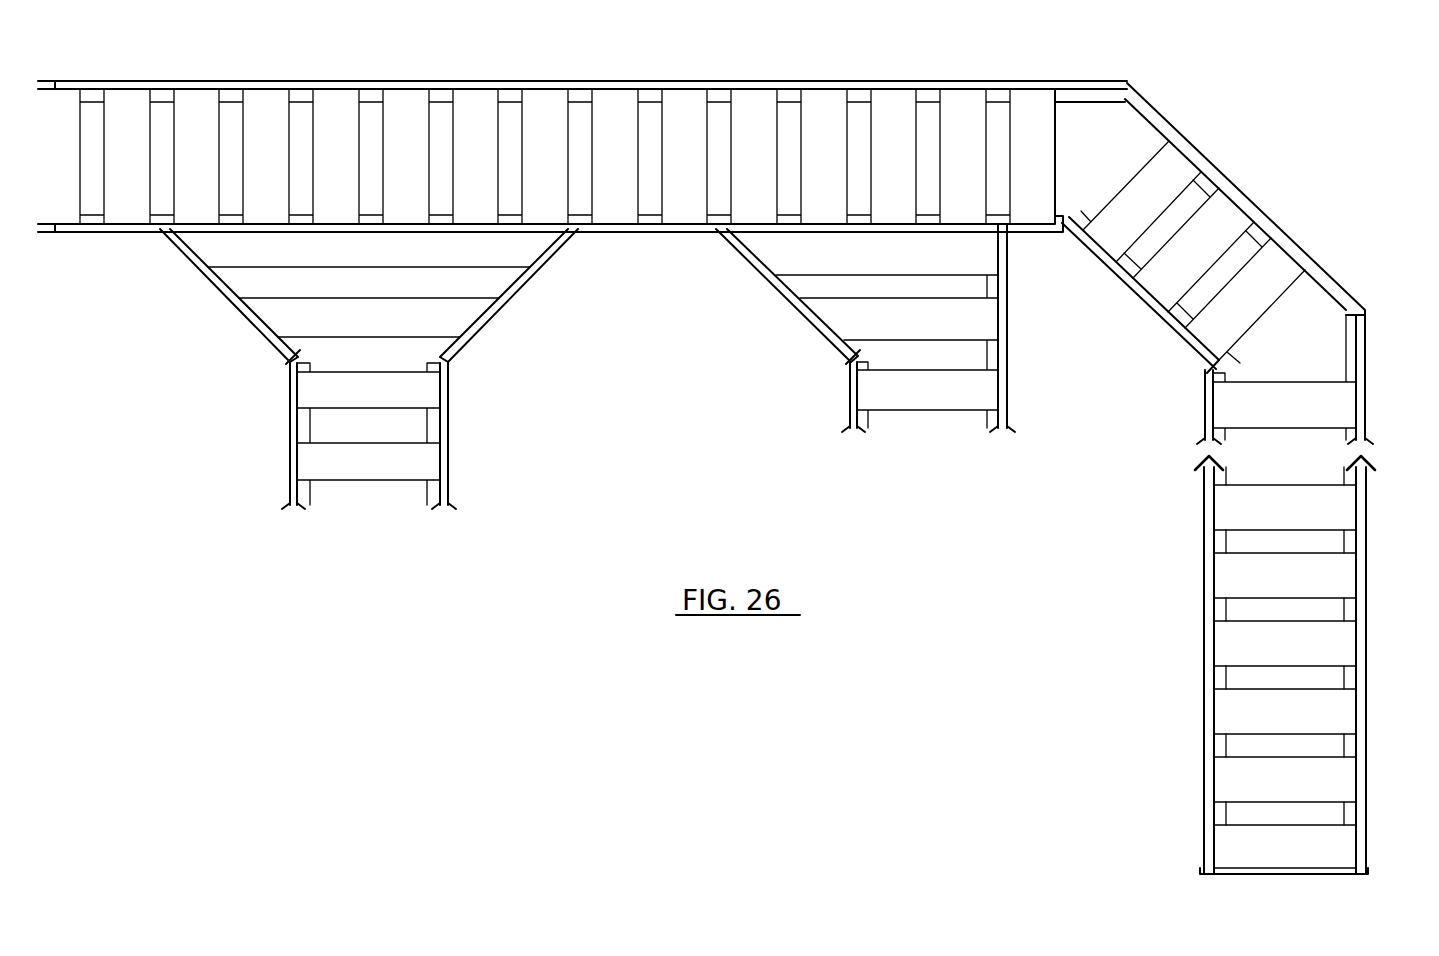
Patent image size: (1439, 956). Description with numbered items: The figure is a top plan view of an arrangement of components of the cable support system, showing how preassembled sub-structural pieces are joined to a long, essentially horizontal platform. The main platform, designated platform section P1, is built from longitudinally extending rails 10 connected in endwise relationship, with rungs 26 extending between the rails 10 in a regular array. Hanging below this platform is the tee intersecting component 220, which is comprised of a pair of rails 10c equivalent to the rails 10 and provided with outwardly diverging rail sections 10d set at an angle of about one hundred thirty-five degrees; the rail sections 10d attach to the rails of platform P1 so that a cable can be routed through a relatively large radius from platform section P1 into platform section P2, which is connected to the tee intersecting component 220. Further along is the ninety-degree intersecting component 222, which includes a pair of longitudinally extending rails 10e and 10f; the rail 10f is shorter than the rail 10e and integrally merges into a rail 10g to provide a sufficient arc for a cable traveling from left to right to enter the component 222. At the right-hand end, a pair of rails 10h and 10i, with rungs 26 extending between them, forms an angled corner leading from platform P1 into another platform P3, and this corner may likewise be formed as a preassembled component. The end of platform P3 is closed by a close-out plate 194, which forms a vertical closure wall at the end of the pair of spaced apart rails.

The rails 10 is at (270, 82).
The rungs 26 is at (120, 104).
The rails of tee intersecting component 10c is at (450, 396).
The outwardly diverging rail sections 10d is at (188, 260).
The longitudinally extending rail 10e is at (1007, 385).
The longitudinally extending rail 10f is at (850, 395).
The rail 10g is at (742, 256).
The rail 10h is at (1303, 268).
The rail 10i is at (1133, 305).
The tee intersecting component 220 is at (234, 315).
The 90° intersecting component 222 is at (789, 313).
The close-out plate 194 is at (1271, 878).
The platform section P1 is at (110, 233).
The platform section P2 is at (455, 440).
The platform section P3 is at (1196, 418).